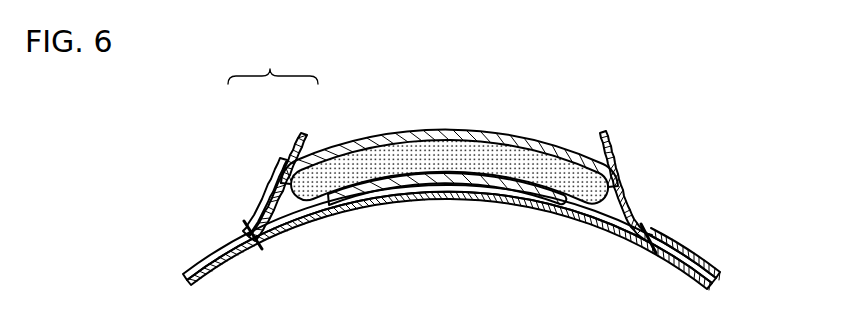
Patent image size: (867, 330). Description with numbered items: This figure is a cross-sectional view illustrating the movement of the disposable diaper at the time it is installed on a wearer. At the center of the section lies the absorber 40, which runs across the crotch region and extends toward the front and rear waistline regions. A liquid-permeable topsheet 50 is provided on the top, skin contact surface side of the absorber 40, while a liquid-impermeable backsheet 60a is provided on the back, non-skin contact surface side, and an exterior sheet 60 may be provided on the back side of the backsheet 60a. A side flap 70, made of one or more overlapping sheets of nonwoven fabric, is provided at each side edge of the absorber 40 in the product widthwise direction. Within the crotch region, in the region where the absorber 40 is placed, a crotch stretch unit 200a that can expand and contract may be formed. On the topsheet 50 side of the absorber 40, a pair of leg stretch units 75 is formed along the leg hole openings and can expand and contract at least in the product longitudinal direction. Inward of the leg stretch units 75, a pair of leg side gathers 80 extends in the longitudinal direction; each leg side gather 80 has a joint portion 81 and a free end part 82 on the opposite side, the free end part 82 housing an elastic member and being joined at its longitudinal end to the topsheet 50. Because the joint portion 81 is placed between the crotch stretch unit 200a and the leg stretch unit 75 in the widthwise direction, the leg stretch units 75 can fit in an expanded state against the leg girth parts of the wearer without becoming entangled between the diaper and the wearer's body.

The absorber 40 is at (321, 186).
The topsheet 50 is at (503, 127).
The exterior sheet 60 is at (597, 228).
The backsheet 60a is at (617, 222).
The side flap 70 is at (224, 233).
The leg stretch unit 75 is at (683, 251).
The leg side gather 80 is at (273, 61).
The joint portion 81 is at (249, 220).
The free end part 82 is at (304, 131).
The crotch stretch unit 200a is at (517, 198).